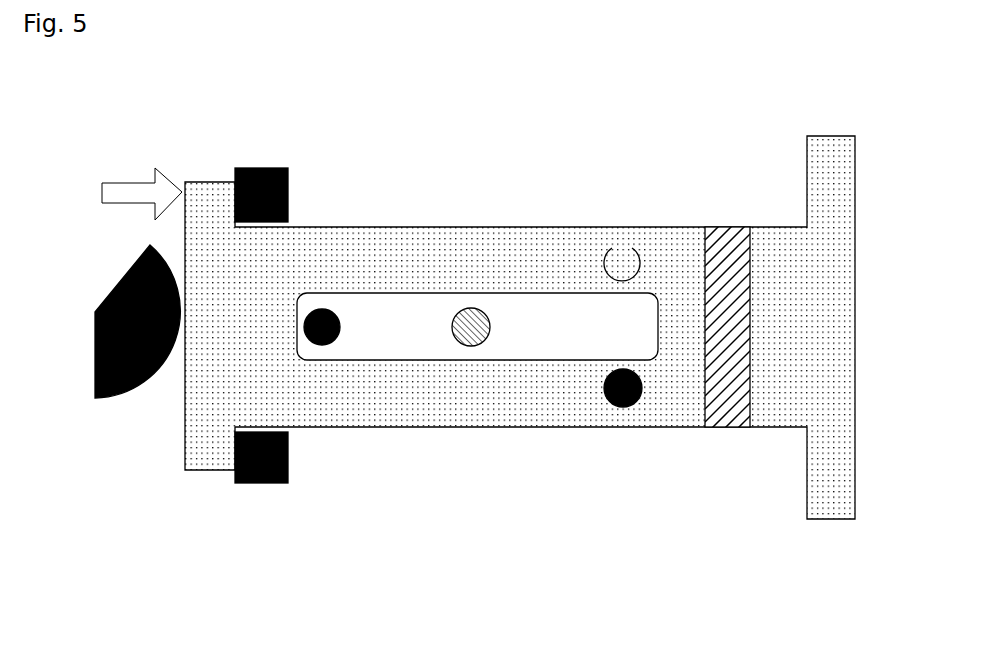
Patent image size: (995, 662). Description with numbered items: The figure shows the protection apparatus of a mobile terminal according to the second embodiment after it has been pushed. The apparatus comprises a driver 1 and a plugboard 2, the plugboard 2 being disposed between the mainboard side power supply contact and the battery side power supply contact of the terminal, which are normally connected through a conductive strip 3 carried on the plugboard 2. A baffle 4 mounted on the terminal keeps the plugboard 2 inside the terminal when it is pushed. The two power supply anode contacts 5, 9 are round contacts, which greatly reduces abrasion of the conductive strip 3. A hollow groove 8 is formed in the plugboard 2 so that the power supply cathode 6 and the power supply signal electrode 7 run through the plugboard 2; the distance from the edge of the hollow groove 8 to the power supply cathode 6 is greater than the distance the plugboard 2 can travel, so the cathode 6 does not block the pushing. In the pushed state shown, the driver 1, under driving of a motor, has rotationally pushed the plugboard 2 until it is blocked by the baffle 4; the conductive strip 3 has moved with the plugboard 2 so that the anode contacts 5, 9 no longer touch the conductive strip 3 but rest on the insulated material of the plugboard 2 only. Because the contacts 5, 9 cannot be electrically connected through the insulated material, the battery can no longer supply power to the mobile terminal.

The driver 1 is at (95, 312).
The plugboard 2 is at (210, 210).
The conductive strip 3 is at (722, 240).
The baffle 4 is at (262, 168).
The power supply anode contact 5 is at (628, 405).
The power supply cathode 6 is at (325, 340).
The power supply signal electrode 7 is at (475, 340).
The hollow groove 8 is at (540, 310).
The power supply anode contact 9 is at (620, 246).